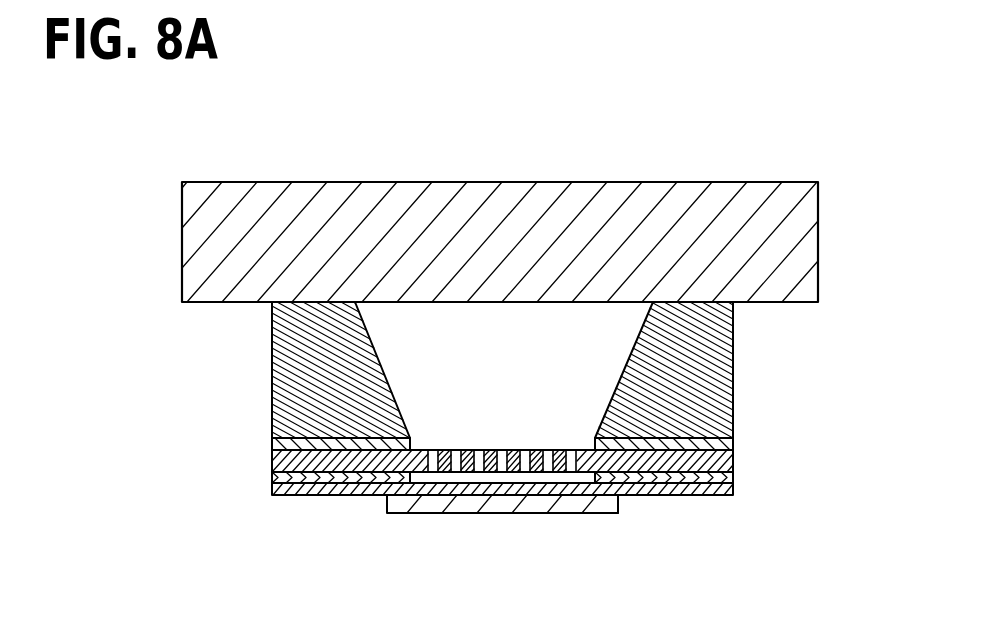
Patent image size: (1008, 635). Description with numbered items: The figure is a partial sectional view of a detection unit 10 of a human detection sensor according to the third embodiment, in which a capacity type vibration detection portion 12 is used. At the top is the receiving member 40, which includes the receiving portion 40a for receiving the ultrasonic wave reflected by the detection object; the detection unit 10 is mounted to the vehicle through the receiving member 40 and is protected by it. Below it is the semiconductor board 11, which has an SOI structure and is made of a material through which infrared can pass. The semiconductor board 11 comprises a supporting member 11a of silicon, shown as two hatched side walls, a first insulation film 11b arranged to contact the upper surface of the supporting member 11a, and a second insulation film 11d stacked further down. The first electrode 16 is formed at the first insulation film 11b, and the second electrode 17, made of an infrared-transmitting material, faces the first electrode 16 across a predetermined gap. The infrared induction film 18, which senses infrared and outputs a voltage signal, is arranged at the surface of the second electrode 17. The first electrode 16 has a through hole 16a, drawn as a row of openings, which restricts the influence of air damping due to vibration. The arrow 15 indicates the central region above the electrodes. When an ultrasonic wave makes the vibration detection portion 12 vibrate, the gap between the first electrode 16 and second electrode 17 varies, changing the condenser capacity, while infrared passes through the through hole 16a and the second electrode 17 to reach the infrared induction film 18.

The detection unit 10 is at (260, 520).
The semiconductor board 11 is at (743, 403).
The supporting member 11a is at (723, 368).
The first insulation film 11b is at (730, 445).
The second insulation film 11d is at (730, 480).
The vibration detection portion 12 is at (463, 499).
The element mounting recess 15 is at (532, 441).
The first electrode 16 is at (730, 462).
The through hole 16a is at (480, 450).
The second electrode 17 is at (733, 490).
The infrared induction film 18 is at (595, 513).
The receiving member 40 is at (615, 198).
The receiving portion 40a is at (378, 182).